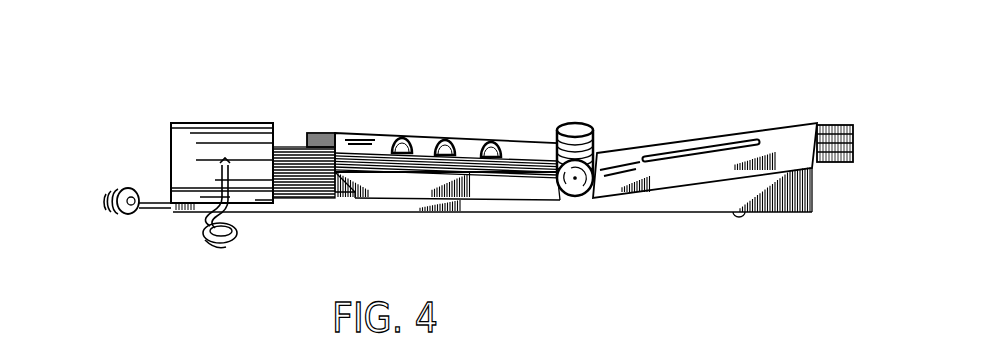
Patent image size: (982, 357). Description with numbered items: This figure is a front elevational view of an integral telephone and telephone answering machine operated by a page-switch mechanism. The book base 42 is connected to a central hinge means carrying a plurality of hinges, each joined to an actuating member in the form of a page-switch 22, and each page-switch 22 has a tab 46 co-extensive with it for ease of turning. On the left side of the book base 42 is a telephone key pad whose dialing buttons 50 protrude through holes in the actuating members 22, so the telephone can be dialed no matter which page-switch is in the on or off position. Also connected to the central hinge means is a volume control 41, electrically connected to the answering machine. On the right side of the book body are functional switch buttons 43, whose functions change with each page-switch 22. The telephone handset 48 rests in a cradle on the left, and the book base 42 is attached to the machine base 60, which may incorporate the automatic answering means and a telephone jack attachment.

The page-switch 22 is at (447, 135).
The volume control 41 is at (575, 200).
The book base 42 is at (771, 171).
The functional switch buttons 43 is at (853, 128).
The tab 46 is at (306, 136).
The telephone handset 48 is at (240, 123).
The dialing buttons 50 is at (401, 137).
The machine base 60 is at (372, 202).